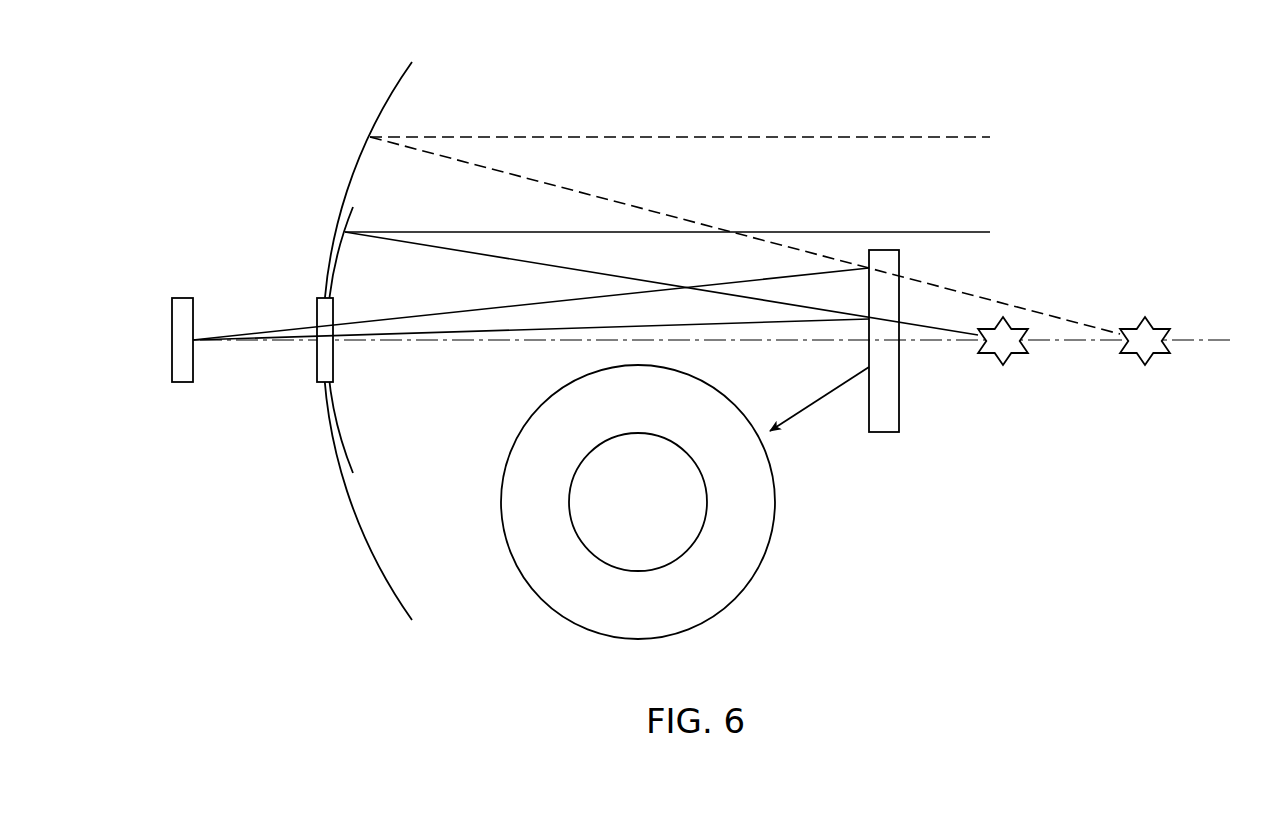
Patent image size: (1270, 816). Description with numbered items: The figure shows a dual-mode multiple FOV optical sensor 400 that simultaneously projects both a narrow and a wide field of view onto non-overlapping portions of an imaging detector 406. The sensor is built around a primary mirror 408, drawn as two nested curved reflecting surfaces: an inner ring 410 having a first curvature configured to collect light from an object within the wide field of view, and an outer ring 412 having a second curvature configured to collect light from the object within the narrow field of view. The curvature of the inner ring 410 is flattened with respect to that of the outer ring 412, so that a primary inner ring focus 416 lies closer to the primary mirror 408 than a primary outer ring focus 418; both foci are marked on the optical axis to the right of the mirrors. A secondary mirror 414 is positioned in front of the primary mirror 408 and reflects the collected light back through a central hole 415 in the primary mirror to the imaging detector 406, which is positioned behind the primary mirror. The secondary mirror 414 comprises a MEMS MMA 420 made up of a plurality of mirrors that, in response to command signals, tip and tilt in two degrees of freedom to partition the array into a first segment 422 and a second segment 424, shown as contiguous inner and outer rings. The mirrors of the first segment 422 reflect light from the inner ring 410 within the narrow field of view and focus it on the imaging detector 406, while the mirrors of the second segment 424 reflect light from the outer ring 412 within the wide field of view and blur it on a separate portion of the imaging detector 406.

The dual-mode multiple FOV optical sensor 400 is at (1124, 91).
The imaging detector 406 is at (183, 298).
The primary mirror 408 is at (356, 341).
The inner ring 410 is at (338, 260).
The outer ring 412 is at (396, 90).
The secondary mirror 414 is at (931, 341).
The central hole 415 is at (333, 367).
The primary inner ring focus 416 is at (1014, 356).
The primary outer ring focus 418 is at (1156, 356).
The MEMS MMA 420 is at (900, 262).
The first segment 422 is at (636, 433).
The second segment 424 is at (668, 502).